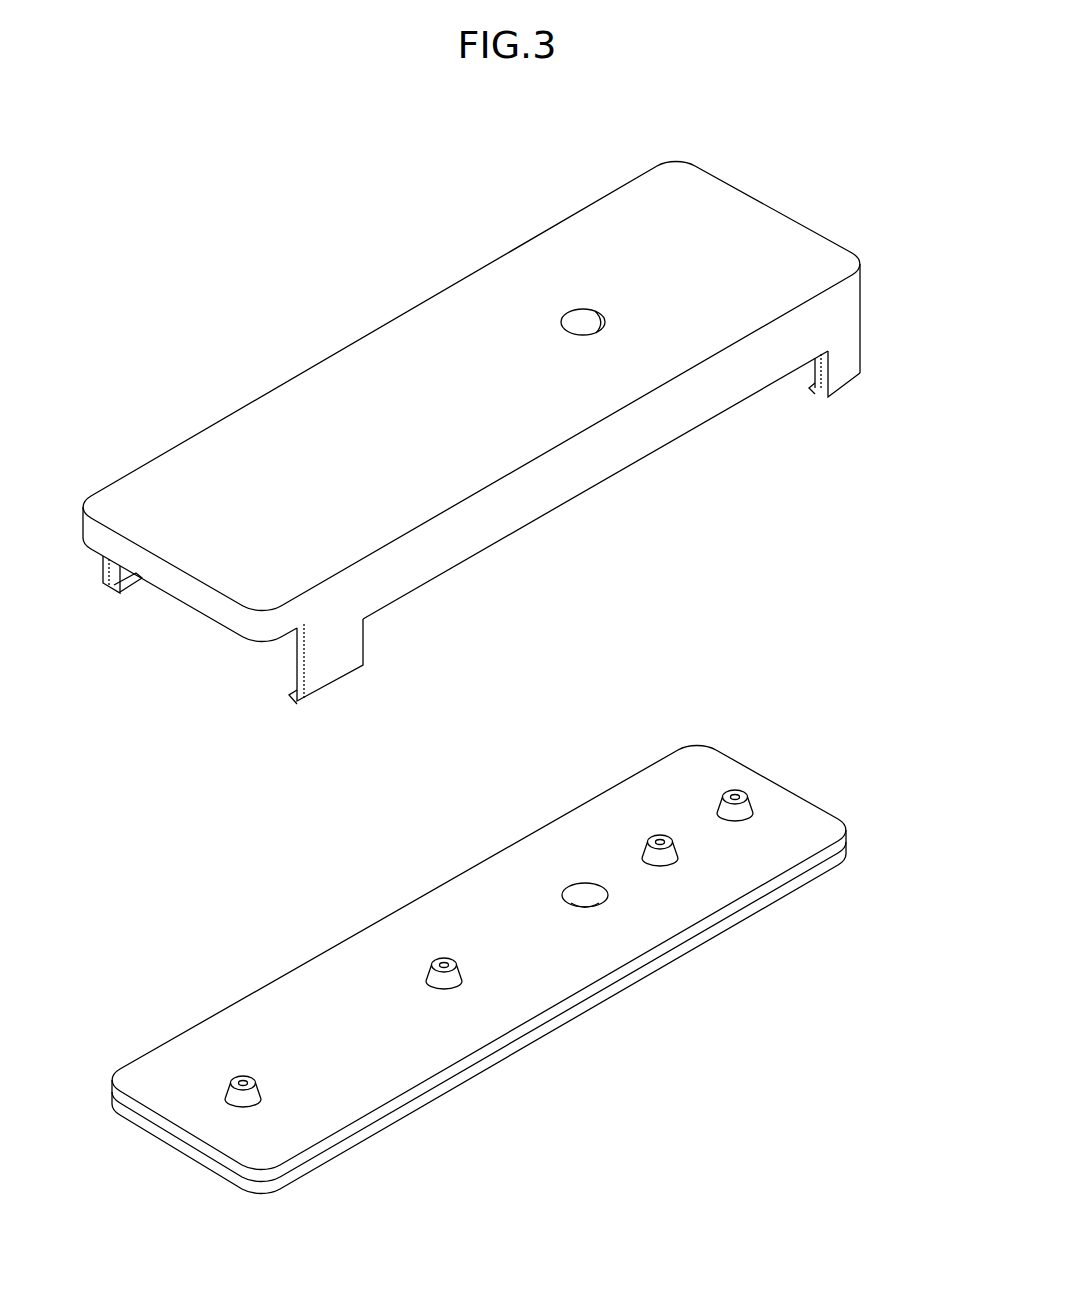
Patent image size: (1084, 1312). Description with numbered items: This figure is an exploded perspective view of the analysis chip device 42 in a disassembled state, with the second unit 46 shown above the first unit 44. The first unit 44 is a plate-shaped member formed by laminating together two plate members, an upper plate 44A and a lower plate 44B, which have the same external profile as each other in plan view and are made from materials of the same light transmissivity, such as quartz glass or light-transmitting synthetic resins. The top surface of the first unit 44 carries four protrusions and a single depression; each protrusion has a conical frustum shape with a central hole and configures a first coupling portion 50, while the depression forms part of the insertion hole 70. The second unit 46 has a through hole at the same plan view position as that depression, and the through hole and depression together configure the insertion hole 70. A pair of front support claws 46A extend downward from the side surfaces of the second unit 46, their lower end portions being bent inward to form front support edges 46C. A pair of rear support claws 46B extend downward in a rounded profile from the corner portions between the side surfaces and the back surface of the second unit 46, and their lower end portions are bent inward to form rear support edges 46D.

The analysis chip device 42 is at (845, 560).
The first unit 44 is at (760, 770).
The upper plate 44A is at (847, 836).
The lower plate 44B is at (847, 853).
The second unit 46 is at (745, 407).
The front support claws 46A is at (103, 572).
The rear support claws 46B is at (843, 374).
The front support edges 46C is at (136, 585).
The rear support edges 46D is at (816, 390).
The first coupling portion 50 is at (240, 1072).
The insertion hole 70 is at (597, 313).